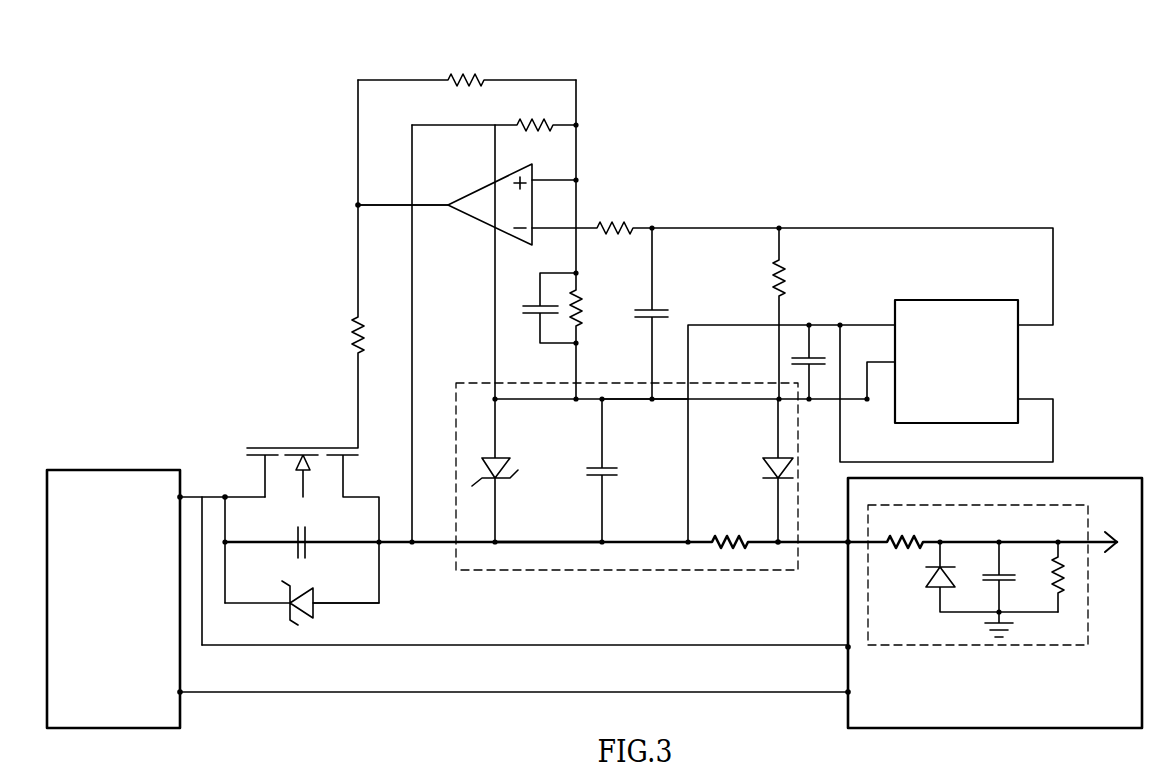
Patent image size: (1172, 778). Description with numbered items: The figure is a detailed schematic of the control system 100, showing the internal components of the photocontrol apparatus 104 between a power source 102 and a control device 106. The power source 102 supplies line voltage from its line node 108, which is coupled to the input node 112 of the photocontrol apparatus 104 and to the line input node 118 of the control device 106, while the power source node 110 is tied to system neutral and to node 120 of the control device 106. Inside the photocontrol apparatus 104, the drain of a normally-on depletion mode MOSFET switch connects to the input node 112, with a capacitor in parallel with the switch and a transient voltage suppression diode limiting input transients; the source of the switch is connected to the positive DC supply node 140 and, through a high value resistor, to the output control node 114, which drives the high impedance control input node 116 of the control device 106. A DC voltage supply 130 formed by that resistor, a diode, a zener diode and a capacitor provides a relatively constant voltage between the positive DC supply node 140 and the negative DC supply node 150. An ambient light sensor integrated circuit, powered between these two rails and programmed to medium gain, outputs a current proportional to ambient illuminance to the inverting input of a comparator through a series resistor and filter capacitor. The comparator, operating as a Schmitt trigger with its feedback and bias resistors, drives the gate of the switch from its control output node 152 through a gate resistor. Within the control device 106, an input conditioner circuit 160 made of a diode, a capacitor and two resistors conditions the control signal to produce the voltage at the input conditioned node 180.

The control system 100 is at (945, 62).
The power source 102 is at (120, 470).
The photocontrol apparatus 104 is at (775, 167).
The control device 106 is at (1068, 478).
The line node 108 is at (182, 494).
The node 110 is at (182, 694).
The input node 112 is at (225, 494).
The output control node 114 is at (778, 546).
The high impedance control input node 116 is at (845, 545).
The line input node 118 is at (848, 645).
The node 120 is at (846, 694).
The DC voltage supply 130 is at (610, 570).
The positive DC supply node 140 is at (572, 540).
The negative DC supply node 150 is at (676, 402).
The control output node 152 is at (380, 203).
The input conditioner circuit 160 is at (1088, 592).
The input conditioned node 180 is at (1095, 540).